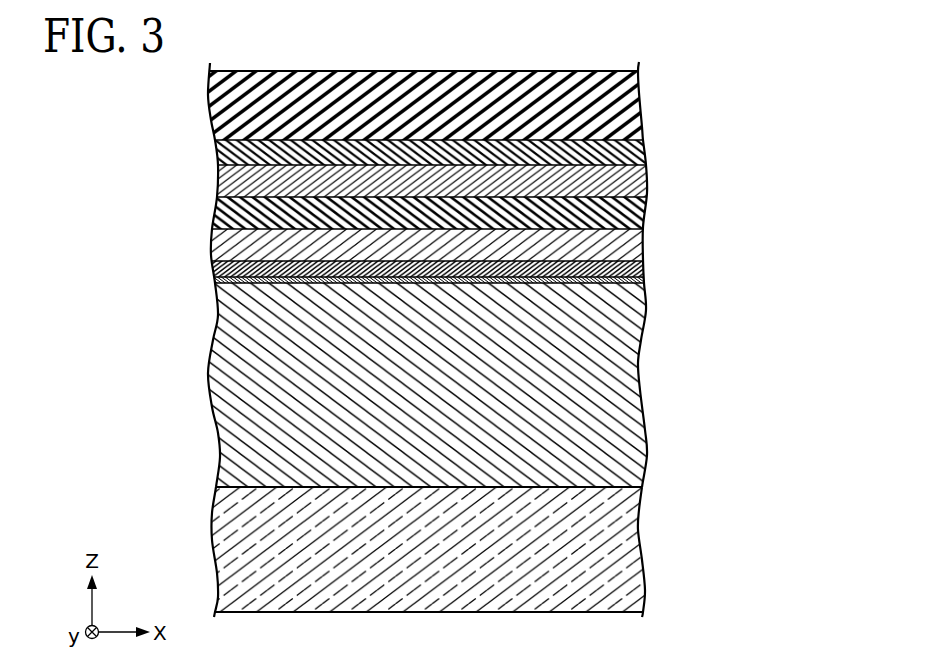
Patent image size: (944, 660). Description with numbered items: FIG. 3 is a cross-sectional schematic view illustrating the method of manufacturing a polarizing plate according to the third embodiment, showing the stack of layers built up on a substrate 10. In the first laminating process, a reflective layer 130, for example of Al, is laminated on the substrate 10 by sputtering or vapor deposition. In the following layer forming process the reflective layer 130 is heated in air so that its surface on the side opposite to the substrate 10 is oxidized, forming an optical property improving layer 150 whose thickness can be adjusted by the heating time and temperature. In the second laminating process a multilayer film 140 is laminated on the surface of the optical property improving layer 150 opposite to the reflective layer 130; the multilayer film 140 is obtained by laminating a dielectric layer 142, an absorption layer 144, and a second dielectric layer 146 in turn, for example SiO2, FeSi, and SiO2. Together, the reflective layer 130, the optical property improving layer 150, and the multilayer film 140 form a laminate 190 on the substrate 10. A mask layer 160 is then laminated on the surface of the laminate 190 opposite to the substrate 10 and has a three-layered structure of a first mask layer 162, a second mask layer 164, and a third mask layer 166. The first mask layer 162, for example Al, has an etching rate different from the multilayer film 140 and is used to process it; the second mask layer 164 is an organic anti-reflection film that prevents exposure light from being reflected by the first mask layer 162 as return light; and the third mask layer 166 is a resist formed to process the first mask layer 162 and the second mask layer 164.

The substrate 10 is at (627, 552).
The reflective layer 130 is at (622, 372).
The multilayer film 140 is at (730, 192).
The dielectric layer 142 is at (634, 272).
The absorption layer 144 is at (627, 243).
The second dielectric layer 146 is at (631, 213).
The optical property improving layer 150 is at (641, 281).
The mask layer 160 is at (730, 80).
The first mask layer 162 is at (633, 185).
The second mask layer 164 is at (636, 151).
The third mask layer 166 is at (620, 104).
The laminate 190 is at (796, 230).